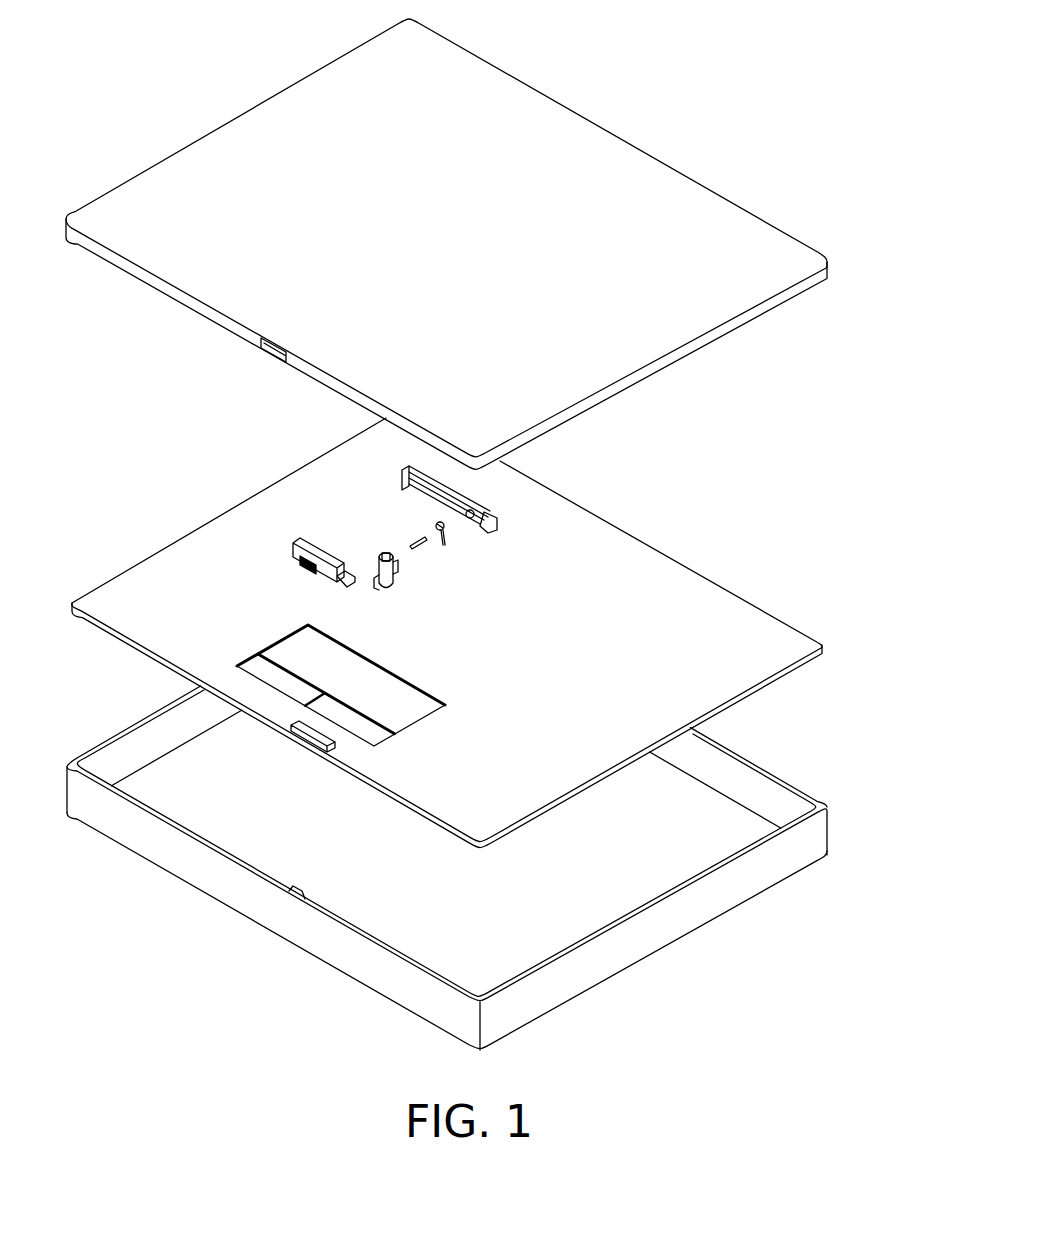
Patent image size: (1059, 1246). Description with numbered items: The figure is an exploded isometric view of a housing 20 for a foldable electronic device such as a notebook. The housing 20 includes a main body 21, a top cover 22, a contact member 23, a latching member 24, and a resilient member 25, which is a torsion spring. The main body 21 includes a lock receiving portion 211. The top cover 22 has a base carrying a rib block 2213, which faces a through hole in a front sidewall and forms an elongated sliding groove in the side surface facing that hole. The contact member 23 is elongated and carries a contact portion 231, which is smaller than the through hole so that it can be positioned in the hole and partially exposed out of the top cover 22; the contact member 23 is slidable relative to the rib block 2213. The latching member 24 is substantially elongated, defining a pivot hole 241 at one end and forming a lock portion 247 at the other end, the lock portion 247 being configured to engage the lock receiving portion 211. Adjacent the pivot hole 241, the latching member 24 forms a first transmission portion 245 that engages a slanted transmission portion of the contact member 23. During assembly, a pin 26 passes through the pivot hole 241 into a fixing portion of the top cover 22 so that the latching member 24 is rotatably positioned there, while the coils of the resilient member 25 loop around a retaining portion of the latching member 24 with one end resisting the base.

The housing 20 is at (650, 85).
The main body 21 is at (727, 753).
The lock receiving portion 211 is at (295, 897).
The top cover 22 is at (702, 208).
The rib block 2213 is at (460, 490).
The contact member 23 is at (297, 543).
The contact portion 231 is at (300, 563).
The latching member 24 is at (400, 590).
The pivot hole 241 is at (398, 567).
The first transmission portion 245 is at (385, 555).
The lock portion 247 is at (377, 585).
The resilient member 25 is at (447, 530).
The pin 26 is at (417, 540).